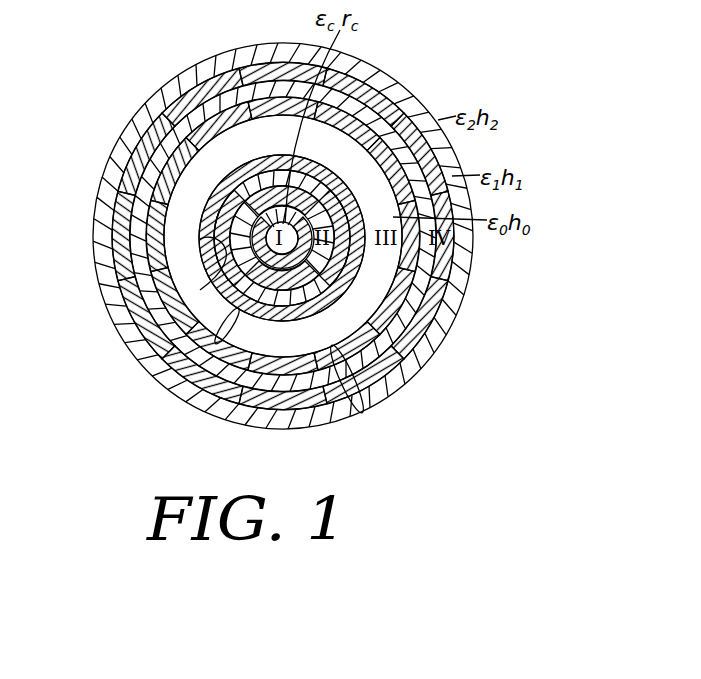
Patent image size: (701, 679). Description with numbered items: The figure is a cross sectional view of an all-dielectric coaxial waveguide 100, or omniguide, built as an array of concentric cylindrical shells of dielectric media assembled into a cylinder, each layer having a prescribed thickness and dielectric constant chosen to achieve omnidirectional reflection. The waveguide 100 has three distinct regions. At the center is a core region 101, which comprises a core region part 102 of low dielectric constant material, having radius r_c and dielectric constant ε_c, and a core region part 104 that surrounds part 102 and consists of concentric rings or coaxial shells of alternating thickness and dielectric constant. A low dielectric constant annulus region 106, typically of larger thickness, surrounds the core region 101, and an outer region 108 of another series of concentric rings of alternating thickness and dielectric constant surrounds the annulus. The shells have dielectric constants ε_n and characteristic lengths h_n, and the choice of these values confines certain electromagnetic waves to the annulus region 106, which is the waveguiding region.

The all-dielectric coaxial waveguide 100 is at (156, 64).
The core region 101 is at (200, 290).
The core region part 102 is at (320, 200).
The core region part 104 is at (282, 255).
The annulus region 106 is at (172, 383).
The outer region 108 is at (362, 413).